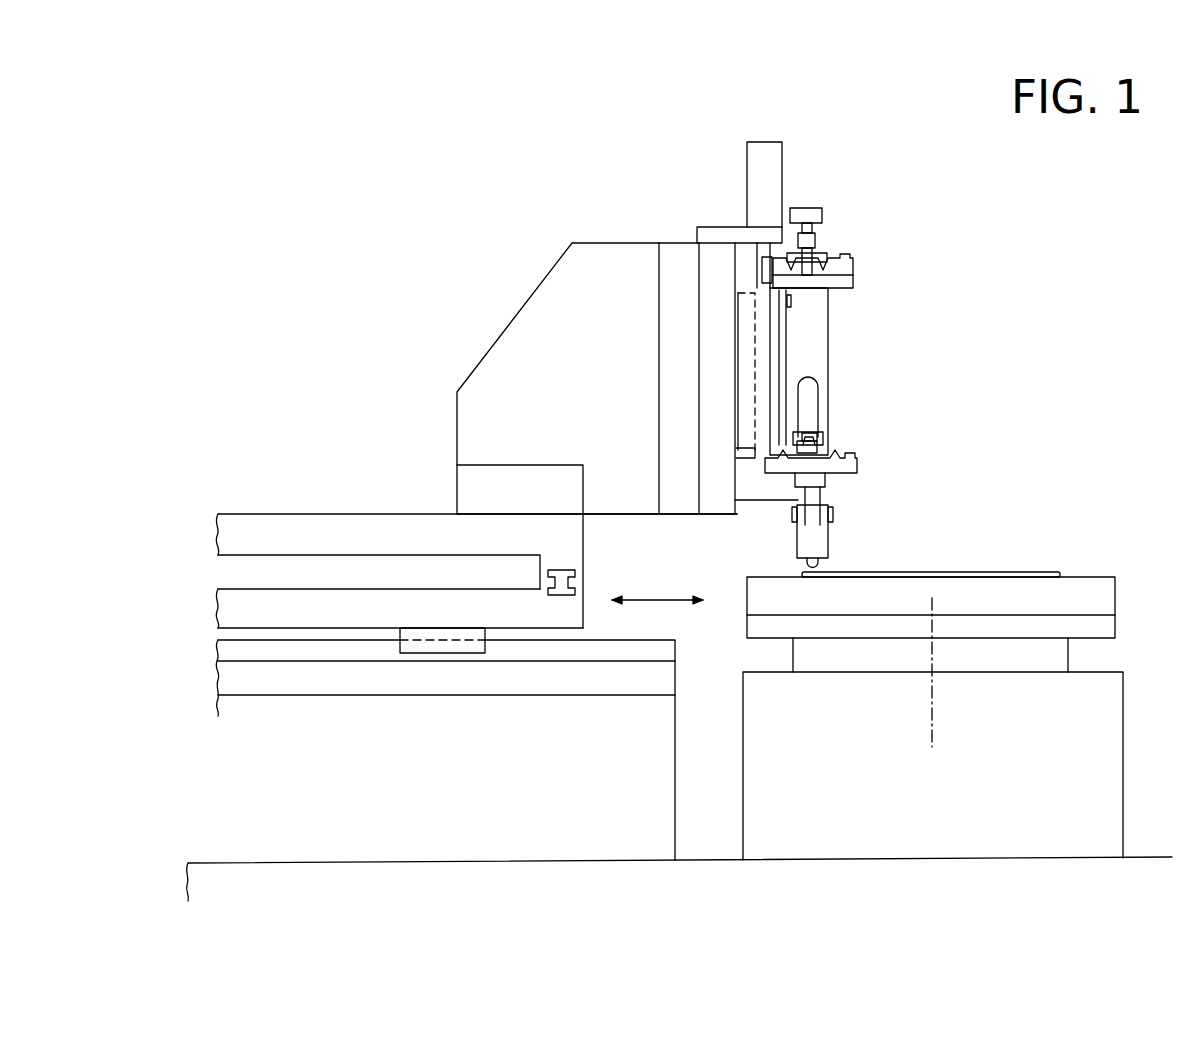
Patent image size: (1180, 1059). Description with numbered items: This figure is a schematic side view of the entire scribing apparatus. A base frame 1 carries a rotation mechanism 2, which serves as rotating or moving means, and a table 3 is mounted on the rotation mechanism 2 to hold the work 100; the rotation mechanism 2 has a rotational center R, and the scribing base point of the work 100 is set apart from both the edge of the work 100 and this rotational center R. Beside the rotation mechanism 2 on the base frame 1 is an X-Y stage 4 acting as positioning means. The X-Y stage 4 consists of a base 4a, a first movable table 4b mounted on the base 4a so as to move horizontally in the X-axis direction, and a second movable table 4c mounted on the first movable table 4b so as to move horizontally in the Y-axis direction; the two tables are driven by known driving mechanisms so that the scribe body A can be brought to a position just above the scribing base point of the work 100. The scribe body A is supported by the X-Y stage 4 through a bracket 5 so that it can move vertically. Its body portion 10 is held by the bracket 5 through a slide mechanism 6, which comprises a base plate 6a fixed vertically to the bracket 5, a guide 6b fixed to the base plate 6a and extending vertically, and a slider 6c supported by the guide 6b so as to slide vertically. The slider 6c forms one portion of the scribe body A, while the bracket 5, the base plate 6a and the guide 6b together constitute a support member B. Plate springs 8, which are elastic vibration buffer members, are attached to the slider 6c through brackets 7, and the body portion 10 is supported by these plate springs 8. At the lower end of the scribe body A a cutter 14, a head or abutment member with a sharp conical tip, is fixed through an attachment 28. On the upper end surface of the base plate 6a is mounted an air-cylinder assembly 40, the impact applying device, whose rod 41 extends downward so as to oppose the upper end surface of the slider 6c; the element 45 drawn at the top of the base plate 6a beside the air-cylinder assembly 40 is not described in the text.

The base frame 1 is at (1166, 856).
The rotation mechanism 2 is at (1123, 697).
The table 3 is at (1092, 577).
The work 100 is at (1030, 572).
The rotational center R is at (935, 722).
The X-Y stage 4 is at (476, 655).
The base 4a is at (505, 817).
The first movable table 4b is at (360, 608).
The second movable table 4c is at (363, 530).
The bracket 5 is at (603, 283).
The slide mechanism 6 is at (688, 240).
The base plate 6a is at (717, 255).
The guide 6b is at (747, 370).
The slider 6c is at (772, 352).
The brackets 7 is at (853, 280).
The plate springs 8 is at (830, 258).
The body portion 10 is at (830, 395).
The cutter 14 is at (818, 564).
The attachment 28 is at (797, 543).
The air-cylinder assembly 40 is at (772, 142).
The rod 41 is at (757, 256).
The top plate 45 is at (733, 225).
The scribe body A is at (855, 322).
The support member B is at (660, 235).